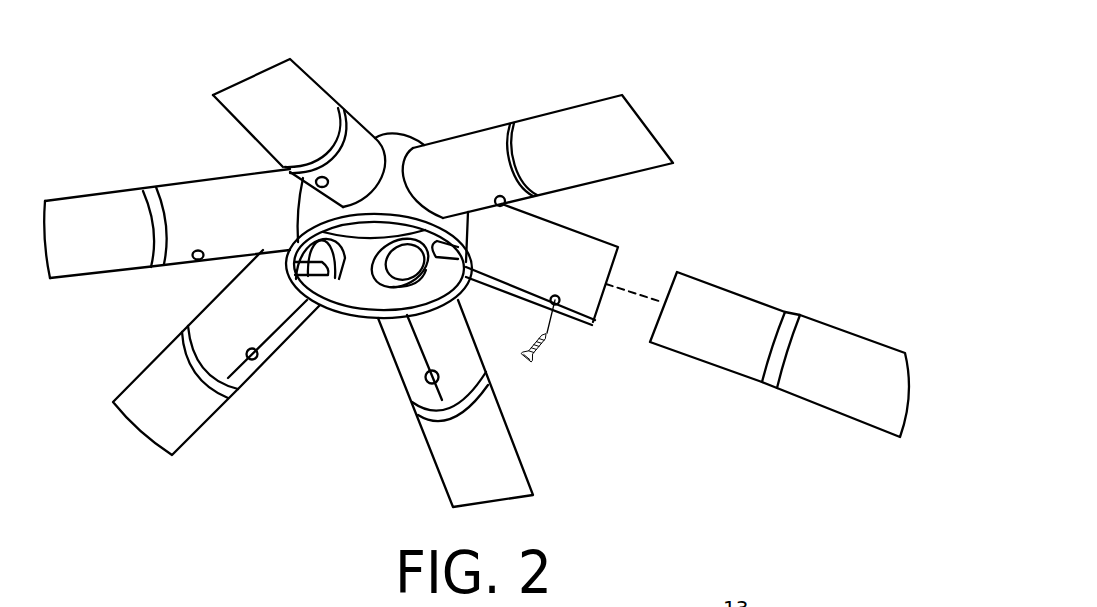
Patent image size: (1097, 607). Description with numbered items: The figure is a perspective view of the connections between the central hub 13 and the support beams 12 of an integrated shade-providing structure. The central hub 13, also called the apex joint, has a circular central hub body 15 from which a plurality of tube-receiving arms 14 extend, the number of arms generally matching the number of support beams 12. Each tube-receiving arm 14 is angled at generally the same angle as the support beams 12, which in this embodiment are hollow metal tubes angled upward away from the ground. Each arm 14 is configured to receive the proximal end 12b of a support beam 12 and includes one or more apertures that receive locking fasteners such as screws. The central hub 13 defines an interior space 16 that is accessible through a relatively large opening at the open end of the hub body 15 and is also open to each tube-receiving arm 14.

The support beam 12 is at (806, 354).
The proximal end 12b is at (690, 343).
The central hub 13 is at (500, 76).
The tube-receiving arm 14 is at (193, 192).
The central hub body 15 is at (380, 137).
The interior space 16 is at (358, 290).